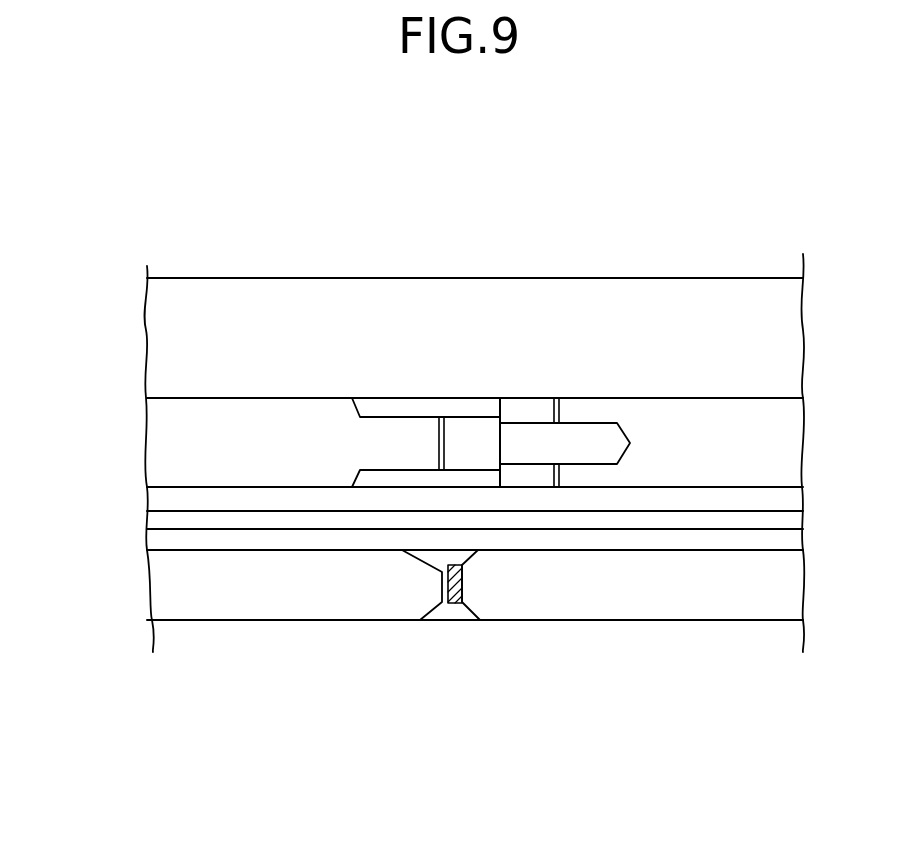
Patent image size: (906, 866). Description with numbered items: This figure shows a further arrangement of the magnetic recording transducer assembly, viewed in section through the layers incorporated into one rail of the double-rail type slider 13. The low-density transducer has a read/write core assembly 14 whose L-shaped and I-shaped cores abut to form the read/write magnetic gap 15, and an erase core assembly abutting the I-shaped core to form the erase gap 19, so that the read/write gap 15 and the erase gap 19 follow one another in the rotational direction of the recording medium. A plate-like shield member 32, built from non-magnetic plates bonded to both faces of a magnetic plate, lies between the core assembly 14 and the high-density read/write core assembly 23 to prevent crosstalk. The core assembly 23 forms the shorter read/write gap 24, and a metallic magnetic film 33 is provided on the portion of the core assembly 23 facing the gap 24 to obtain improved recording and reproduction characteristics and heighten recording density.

The double-rail type slider 13 is at (225, 298).
The read/write core assembly 14 is at (672, 413).
The read/write magnetic gap 15 is at (438, 443).
The erase gap 19 is at (555, 480).
The read/write core assembly 23 is at (668, 594).
The read/write gap 24 is at (442, 590).
The shield member 32 is at (134, 486).
The metallic magnetic film 33 is at (463, 587).